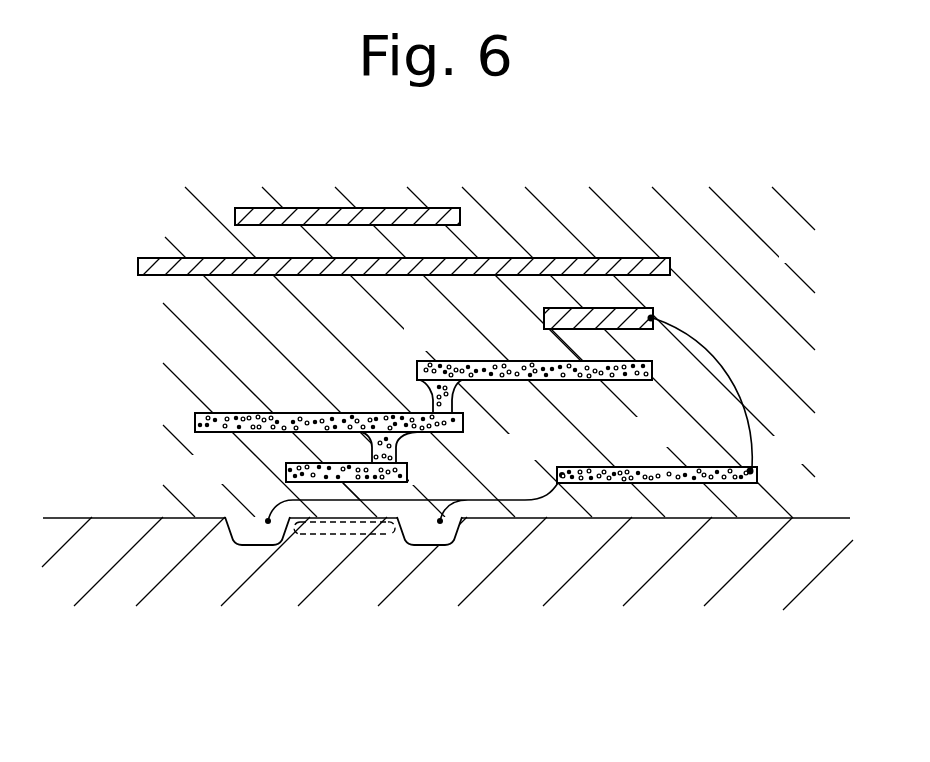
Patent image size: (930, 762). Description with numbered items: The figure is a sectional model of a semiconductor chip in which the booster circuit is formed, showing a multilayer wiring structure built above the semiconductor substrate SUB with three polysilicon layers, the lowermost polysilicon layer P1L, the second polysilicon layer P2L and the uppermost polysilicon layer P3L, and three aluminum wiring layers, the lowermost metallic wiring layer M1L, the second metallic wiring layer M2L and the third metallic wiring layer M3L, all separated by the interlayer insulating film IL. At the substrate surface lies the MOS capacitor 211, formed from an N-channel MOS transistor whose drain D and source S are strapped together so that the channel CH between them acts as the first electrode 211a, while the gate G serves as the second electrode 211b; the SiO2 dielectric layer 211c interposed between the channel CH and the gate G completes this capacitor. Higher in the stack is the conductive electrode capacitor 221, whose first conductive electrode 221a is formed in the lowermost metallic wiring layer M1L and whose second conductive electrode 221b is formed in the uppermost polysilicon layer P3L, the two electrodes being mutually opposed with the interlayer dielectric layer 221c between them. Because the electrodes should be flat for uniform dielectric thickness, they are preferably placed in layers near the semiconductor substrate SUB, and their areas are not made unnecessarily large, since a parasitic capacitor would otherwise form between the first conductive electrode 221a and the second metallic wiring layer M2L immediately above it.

The conductive electrode capacitor 221 is at (445, 309).
The first conductive electrode 221a is at (445, 281).
The second conductive electrode 221b is at (363, 402).
The dielectric layer 221c is at (582, 342).
The interlayer insulating film IL is at (658, 295).
The semiconductor substrate SUB is at (748, 536).
The MOS capacitor 211 is at (343, 573).
The first electrode 211a is at (494, 503).
The second electrode 211b is at (409, 460).
The dielectric layer 211c is at (318, 491).
The gate G is at (358, 472).
The source S is at (257, 533).
The drain D is at (429, 533).
The channel CH is at (348, 534).
The lowermost metallic wiring layer M1L is at (160, 308).
The second metallic wiring layer M2L is at (130, 264).
The third metallic wiring layer M3L is at (160, 209).
The lowermost polysilicon layer P1L is at (400, 460).
The second polysilicon layer P2L is at (160, 419).
The uppermost polysilicon layer P3L is at (160, 370).